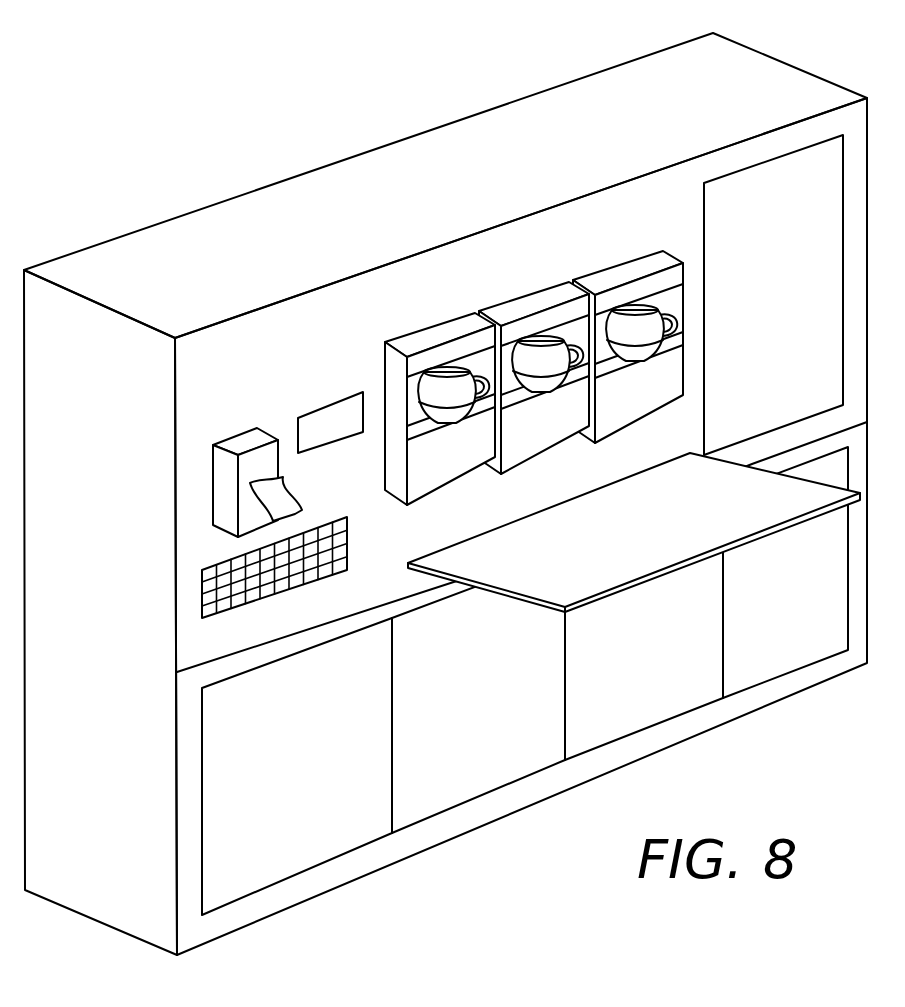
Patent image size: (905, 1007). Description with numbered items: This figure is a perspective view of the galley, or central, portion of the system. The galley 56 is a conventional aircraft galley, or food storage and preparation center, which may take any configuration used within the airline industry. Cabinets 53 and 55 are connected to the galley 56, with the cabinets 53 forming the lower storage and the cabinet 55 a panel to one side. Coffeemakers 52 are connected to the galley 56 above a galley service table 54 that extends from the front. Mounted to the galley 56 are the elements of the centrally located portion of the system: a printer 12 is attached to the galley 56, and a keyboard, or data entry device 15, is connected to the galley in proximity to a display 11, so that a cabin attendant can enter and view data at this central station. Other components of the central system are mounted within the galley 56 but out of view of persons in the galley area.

The display 11 is at (298, 418).
The printer 12 is at (213, 482).
The keyboard 15 is at (330, 555).
The galley coffeemakers 52 is at (383, 360).
The galley cabinets 53 is at (287, 837).
The galley service table 54 is at (658, 562).
The cabinet 55 is at (702, 197).
The galley 56 is at (445, 502).